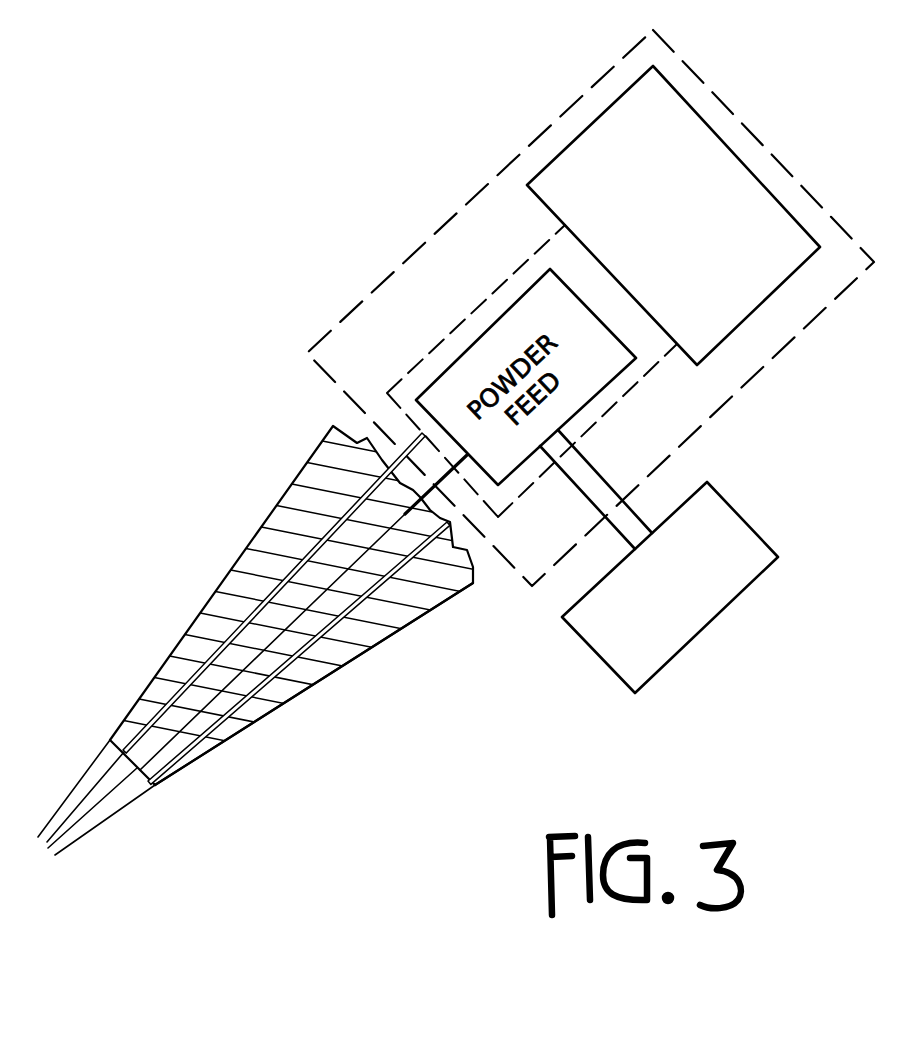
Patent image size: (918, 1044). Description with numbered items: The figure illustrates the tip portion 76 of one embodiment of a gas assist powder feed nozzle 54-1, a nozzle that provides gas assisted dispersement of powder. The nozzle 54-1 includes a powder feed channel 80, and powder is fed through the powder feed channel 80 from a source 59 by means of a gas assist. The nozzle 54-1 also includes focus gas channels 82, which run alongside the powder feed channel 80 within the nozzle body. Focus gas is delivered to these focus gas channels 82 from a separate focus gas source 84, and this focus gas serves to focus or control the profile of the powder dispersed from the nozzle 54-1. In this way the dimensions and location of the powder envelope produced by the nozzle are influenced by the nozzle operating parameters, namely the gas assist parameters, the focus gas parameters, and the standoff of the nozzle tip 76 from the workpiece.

The gas assist powder feed nozzle 54-1 is at (216, 575).
The focus gas channels 82 is at (298, 475).
The powder feed channel 80 is at (338, 577).
The tip portion 76 is at (270, 714).
The focus gas source 84 is at (712, 170).
The powder source 59 is at (680, 652).